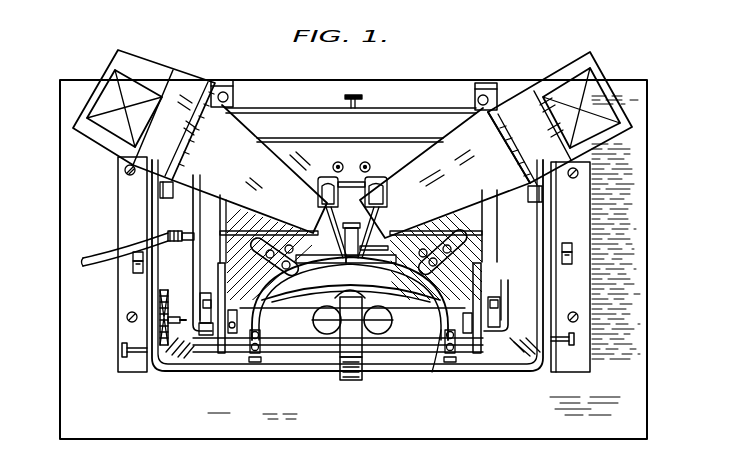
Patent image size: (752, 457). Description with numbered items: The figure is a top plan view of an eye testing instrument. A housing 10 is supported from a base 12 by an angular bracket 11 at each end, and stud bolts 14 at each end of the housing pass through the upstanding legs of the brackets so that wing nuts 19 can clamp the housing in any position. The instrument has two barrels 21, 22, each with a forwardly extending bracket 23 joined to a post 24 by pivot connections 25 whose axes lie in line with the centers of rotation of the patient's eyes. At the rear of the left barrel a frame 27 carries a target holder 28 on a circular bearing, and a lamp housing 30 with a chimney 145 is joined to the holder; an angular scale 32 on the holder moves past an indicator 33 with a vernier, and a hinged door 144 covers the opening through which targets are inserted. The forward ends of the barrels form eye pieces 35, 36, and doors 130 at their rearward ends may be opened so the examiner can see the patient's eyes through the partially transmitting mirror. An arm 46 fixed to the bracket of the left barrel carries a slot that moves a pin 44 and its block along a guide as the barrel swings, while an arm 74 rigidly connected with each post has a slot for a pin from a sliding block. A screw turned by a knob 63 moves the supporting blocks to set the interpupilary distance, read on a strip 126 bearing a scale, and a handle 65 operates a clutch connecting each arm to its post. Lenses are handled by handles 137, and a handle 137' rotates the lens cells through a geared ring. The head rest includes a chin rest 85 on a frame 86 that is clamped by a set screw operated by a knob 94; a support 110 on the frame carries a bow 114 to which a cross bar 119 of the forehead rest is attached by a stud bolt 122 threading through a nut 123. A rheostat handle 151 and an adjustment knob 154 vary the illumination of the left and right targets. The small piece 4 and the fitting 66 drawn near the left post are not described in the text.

The bracket 4 is at (241, 320).
The housing 10 is at (419, 381).
The angular bracket 11 is at (128, 372).
The base 12 is at (635, 397).
The stud bolt 14 is at (133, 260).
The wing nut 19 is at (137, 273).
The barrel 21 is at (229, 143).
The barrel 22 is at (462, 142).
The forwardly extending bracket 23 is at (209, 227).
The post 24 is at (229, 338).
The pivot connection 25 is at (258, 352).
The frame 27 is at (193, 167).
The target holder 28 is at (140, 176).
The lamp housing 30 is at (85, 128).
The angular scale 32 is at (224, 84).
The indicator 33 is at (248, 80).
The eye piece 35 is at (328, 243).
The eye piece 36 is at (371, 249).
The pin 44 is at (212, 338).
The arm 46 is at (203, 296).
The wheel or knob 63 is at (160, 309).
The handle 65 is at (321, 326).
The fitting 66 is at (178, 247).
The arm 74 is at (252, 244).
The chin rest 85 is at (350, 323).
The frame 86 is at (350, 381).
The knob 94 is at (122, 350).
The support 110 is at (276, 372).
The bow 114 is at (437, 312).
The cross bar 119 is at (350, 302).
The stud bolt 122 is at (368, 232).
The nut 123 is at (372, 245).
The strip 126 is at (366, 162).
The door 130 is at (362, 214).
The handle 137 is at (360, 263).
The handle 137' is at (350, 298).
The door 144 is at (190, 82).
The chimney 145 is at (113, 83).
The handle 151 is at (166, 197).
The adjustment knob 154 is at (540, 195).